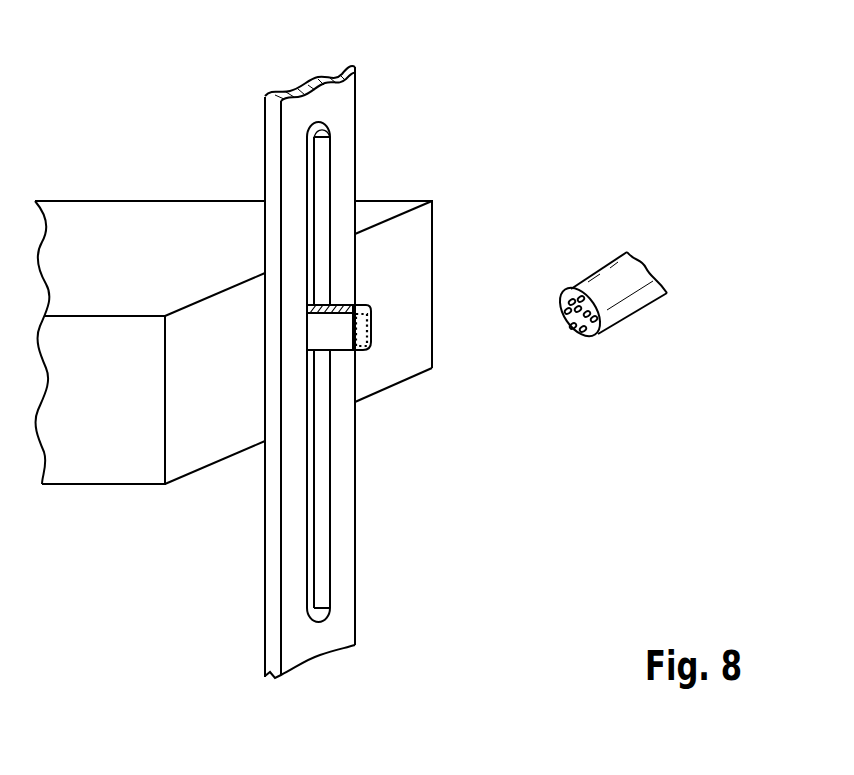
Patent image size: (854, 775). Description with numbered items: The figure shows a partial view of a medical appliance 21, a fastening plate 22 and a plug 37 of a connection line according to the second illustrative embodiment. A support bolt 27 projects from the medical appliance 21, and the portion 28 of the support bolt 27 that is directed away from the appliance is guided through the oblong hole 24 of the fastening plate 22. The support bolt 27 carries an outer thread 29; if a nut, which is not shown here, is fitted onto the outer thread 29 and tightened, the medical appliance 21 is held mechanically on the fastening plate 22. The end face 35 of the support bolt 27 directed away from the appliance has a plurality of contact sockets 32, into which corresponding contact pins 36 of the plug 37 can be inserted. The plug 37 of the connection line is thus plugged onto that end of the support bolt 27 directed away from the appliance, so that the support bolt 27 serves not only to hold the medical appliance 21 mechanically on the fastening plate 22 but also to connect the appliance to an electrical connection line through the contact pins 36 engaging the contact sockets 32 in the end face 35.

The medical appliance 21 is at (139, 114).
The fastening plate 22 is at (376, 107).
The oblong hole 24 is at (320, 162).
The support bolt 27 is at (386, 291).
The portion of the support bolt directed away from the appliance 28 is at (356, 286).
The outer thread 29 is at (335, 312).
The contact sockets 32 is at (370, 335).
The end face 35 is at (370, 312).
The contact pins 36 is at (583, 333).
The plug 37 is at (647, 351).